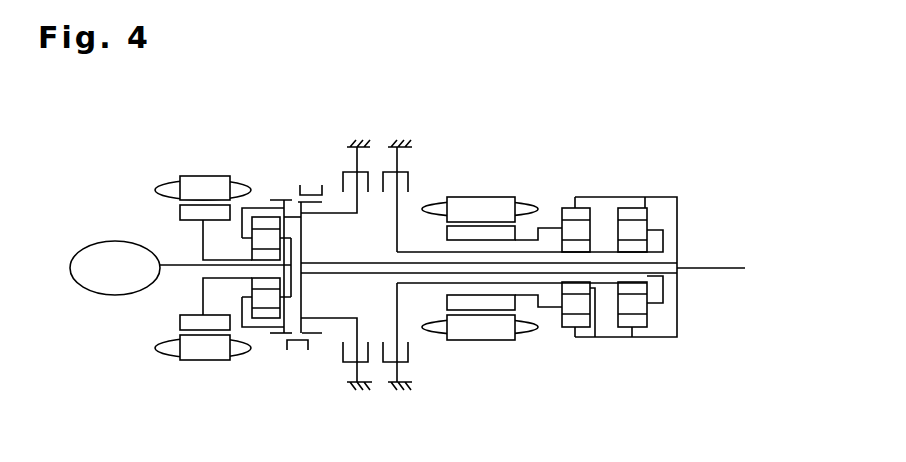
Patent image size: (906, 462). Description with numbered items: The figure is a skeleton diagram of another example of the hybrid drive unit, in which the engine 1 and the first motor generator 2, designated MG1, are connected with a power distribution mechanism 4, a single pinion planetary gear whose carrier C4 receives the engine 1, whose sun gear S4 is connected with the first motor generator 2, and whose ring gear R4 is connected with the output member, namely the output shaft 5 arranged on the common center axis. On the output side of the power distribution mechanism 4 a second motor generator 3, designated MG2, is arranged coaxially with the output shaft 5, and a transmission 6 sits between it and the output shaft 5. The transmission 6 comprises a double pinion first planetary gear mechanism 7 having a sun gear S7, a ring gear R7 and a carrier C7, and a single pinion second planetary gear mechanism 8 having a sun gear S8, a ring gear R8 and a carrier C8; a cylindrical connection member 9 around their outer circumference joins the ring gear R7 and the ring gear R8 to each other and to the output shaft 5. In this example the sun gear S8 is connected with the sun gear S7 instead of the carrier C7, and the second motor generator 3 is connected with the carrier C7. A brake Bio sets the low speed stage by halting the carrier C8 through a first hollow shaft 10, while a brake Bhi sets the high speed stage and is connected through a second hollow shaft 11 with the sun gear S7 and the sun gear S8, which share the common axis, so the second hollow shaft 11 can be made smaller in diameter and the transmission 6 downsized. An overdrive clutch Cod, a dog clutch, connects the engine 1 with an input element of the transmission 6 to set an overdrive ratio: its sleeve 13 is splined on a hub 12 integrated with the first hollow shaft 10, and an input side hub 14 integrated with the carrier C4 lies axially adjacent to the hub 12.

The internal combustion engine 1 is at (114, 241).
The first motor generator 2 is at (196, 256).
The second motor generator 3 is at (492, 259).
The power distribution mechanism 4 is at (254, 288).
The output shaft 5 is at (722, 272).
The transmission 6 is at (609, 272).
The first planetary gear mechanism 7 is at (556, 285).
The second planetary gear mechanism 8 is at (663, 287).
The connection member 9 is at (632, 207).
The first hollow shaft 10 is at (343, 262).
The second hollow shaft 11 is at (410, 252).
The hub 12 is at (304, 334).
The sleeve 13 is at (298, 351).
The input side hub 14 is at (278, 336).
The ring gear R4 is at (260, 216).
The carrier C4 is at (243, 238).
The sun gear S4 is at (250, 281).
The overdrive clutch Cod is at (304, 182).
The brake Blo Bio is at (336, 255).
The brake Bhi is at (399, 255).
The first motor generator MG1 is at (152, 163).
The second motor generator MG2 is at (529, 191).
The ring gear R7 is at (573, 208).
The carrier C7 is at (548, 307).
The sun gear S7 is at (600, 337).
The ring gear R8 is at (648, 218).
The carrier C8 is at (663, 235).
The sun gear S8 is at (650, 246).